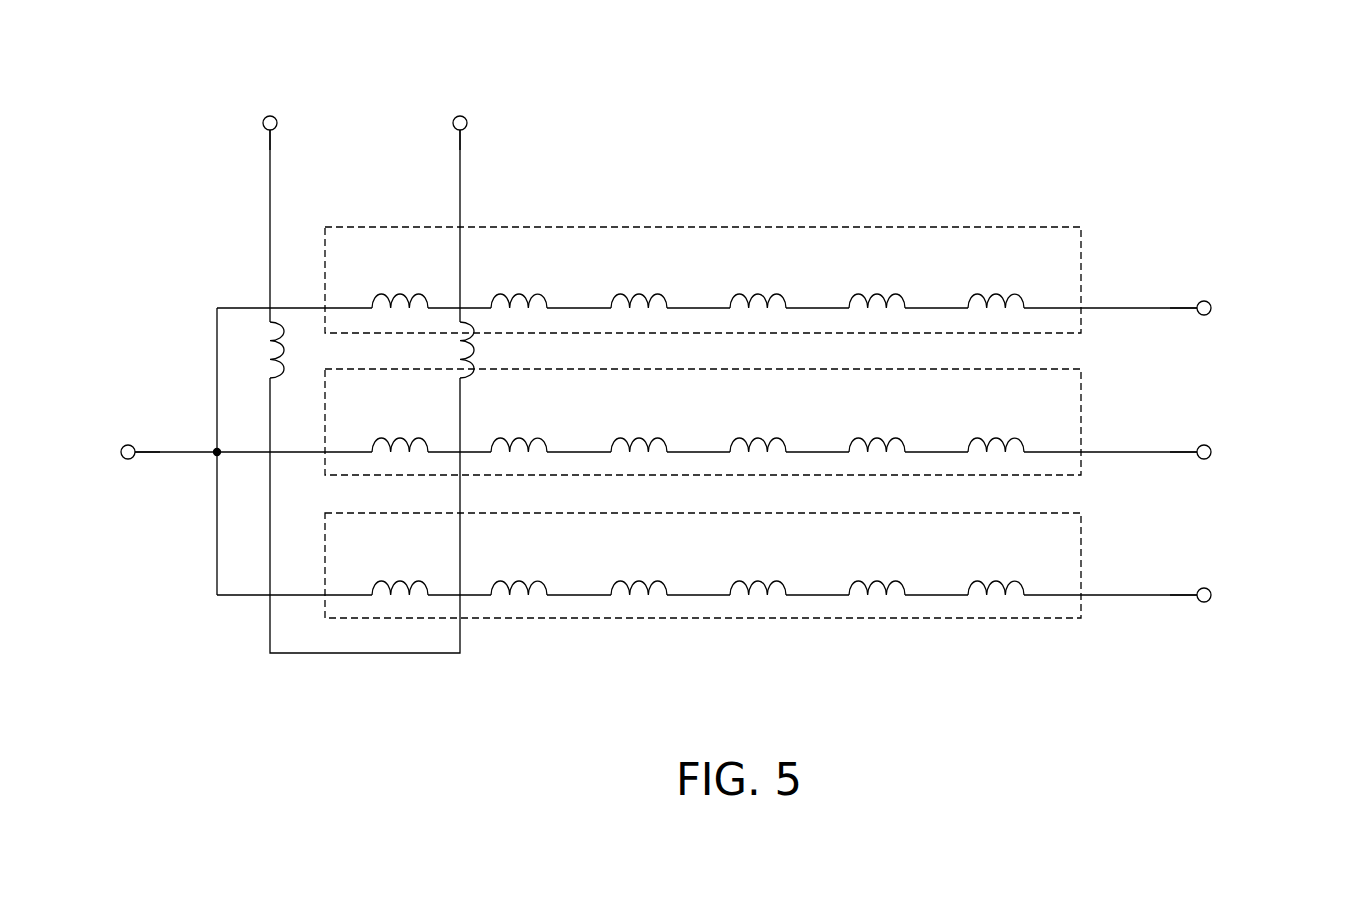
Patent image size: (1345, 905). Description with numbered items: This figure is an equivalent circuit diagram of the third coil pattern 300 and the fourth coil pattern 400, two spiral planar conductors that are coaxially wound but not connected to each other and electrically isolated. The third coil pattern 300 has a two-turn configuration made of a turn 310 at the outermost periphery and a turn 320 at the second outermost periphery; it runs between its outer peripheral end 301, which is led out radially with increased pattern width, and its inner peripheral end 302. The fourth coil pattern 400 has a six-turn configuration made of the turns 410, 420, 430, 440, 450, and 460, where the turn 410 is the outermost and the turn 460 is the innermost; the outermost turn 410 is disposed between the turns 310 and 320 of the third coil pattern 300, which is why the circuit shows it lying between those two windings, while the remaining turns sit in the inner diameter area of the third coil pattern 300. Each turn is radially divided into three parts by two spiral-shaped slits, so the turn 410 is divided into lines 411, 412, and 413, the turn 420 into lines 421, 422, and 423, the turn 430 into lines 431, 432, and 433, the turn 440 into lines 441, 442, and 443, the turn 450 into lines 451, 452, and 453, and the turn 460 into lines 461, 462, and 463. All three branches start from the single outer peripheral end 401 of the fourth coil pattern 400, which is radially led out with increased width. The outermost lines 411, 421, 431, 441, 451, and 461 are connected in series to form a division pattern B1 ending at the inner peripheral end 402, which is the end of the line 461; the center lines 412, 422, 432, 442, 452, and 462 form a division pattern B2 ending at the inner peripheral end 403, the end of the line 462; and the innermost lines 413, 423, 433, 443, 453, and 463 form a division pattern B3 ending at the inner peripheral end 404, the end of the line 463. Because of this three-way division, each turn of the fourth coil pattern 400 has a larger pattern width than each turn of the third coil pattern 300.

The third coil pattern 300 is at (361, 657).
The outer peripheral end 301 is at (271, 116).
The inner peripheral end 302 is at (461, 116).
The turn 310 is at (286, 348).
The turn 320 is at (476, 348).
The fourth coil pattern 400 is at (1106, 148).
The outer peripheral end 401 is at (129, 444).
The inner peripheral end 402 is at (1212, 308).
The inner peripheral end 403 is at (1212, 452).
The inner peripheral end 404 is at (1212, 595).
The turn 410 is at (399, 218).
The line 411 is at (400, 292).
The line 412 is at (400, 436).
The line 413 is at (400, 579).
The turn 420 is at (517, 218).
The line 421 is at (519, 292).
The line 422 is at (519, 436).
The line 423 is at (519, 579).
The turn 430 is at (637, 218).
The line 431 is at (639, 292).
The line 432 is at (639, 436).
The line 433 is at (639, 579).
The turn 440 is at (757, 218).
The line 441 is at (758, 292).
The line 442 is at (758, 436).
The line 443 is at (758, 579).
The turn 450 is at (877, 218).
The line 451 is at (877, 292).
The line 452 is at (877, 436).
The line 453 is at (877, 579).
The turn 460 is at (996, 218).
The line 461 is at (996, 292).
The line 462 is at (996, 436).
The line 463 is at (996, 579).
The division pattern B1 is at (1084, 237).
The division pattern B2 is at (1084, 379).
The division pattern B3 is at (1084, 520).